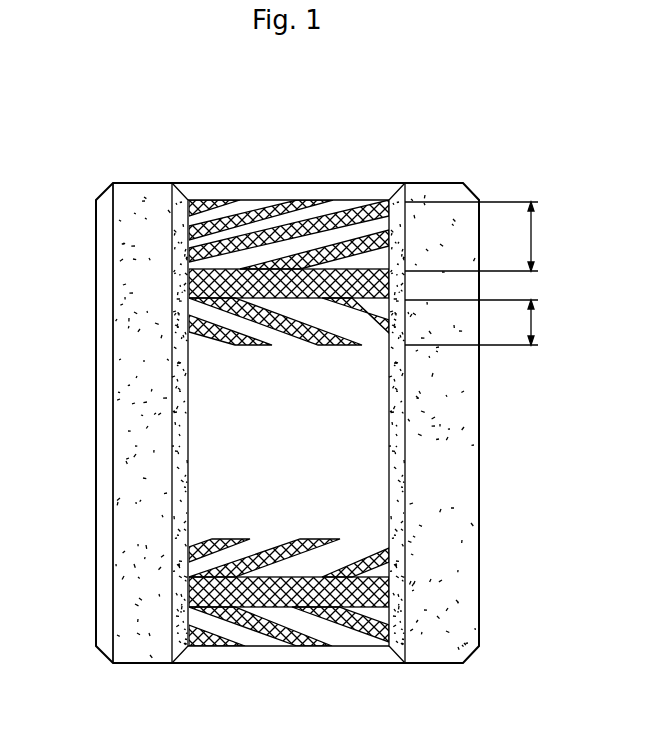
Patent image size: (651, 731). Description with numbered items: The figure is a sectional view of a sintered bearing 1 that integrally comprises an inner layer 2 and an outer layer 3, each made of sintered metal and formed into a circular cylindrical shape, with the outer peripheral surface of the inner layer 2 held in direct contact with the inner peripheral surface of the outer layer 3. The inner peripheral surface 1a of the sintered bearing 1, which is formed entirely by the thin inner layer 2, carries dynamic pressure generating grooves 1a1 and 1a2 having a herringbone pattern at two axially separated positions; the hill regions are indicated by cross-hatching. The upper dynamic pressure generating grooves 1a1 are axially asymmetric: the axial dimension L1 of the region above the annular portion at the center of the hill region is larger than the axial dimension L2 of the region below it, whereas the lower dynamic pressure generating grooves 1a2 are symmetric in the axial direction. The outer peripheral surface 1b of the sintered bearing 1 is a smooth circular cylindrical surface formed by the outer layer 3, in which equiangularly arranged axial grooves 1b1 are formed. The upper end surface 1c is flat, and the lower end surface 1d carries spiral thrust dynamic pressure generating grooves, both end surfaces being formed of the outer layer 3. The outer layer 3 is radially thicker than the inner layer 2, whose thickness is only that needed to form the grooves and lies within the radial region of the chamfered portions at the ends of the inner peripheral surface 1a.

The sintered bearing 1 is at (497, 168).
The inner peripheral surface 1a is at (366, 441).
The dynamic pressure generating grooves 1a1 is at (334, 213).
The dynamic pressure generating grooves 1a2 is at (326, 634).
The outer peripheral surface 1b is at (479, 522).
The axial grooves 1b1 is at (113, 470).
The upper end surface 1c is at (436, 183).
The lower end surface 1d is at (147, 664).
The inner layer 2 is at (172, 312).
The outer layer 3 is at (135, 390).
The axial dimension L1 is at (532, 233).
The axial dimension L2 is at (532, 322).